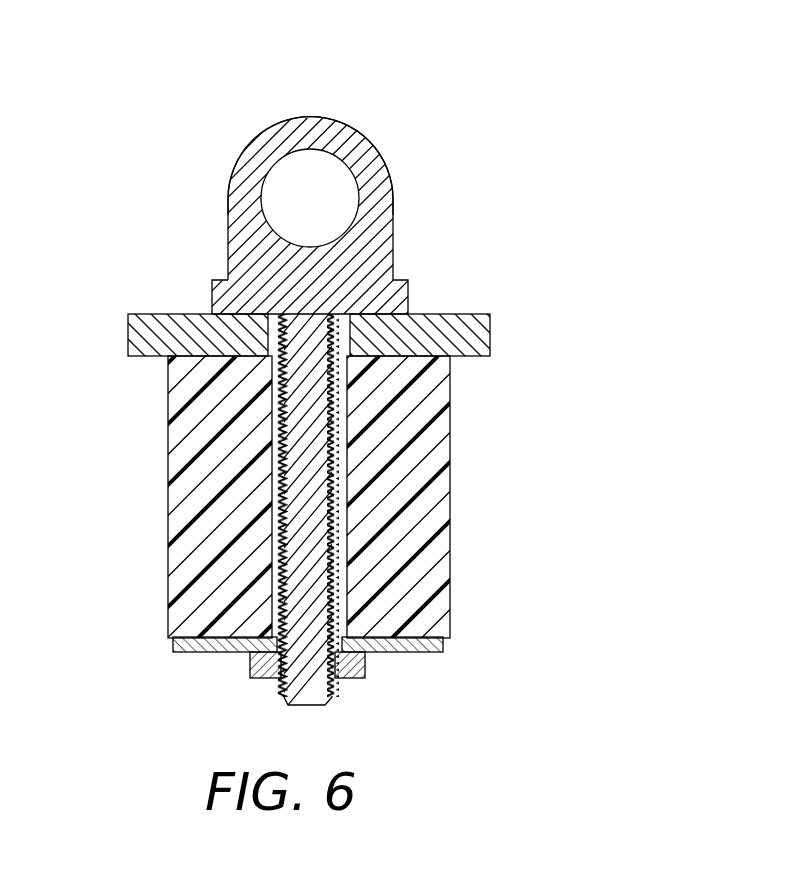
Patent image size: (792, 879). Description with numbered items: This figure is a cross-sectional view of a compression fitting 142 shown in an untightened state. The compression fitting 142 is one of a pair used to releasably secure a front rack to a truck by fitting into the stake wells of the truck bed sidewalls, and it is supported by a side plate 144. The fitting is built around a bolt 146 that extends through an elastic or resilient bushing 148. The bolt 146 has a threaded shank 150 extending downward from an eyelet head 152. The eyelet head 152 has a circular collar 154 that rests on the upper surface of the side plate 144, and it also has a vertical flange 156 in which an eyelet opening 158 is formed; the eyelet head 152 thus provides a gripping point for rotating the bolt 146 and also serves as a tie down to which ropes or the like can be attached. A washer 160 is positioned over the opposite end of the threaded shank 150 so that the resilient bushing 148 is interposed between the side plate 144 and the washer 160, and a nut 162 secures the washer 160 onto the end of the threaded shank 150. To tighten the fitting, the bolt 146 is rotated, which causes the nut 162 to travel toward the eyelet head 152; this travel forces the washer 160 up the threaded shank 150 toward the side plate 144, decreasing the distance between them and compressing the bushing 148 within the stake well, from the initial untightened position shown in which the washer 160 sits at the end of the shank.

The compression fitting 142 is at (533, 128).
The side plate 144 is at (490, 340).
The bolt 146 is at (343, 441).
The resilient bushing 148 is at (167, 520).
The threaded shank 150 is at (337, 540).
The eyelet head 152 is at (385, 205).
The circular collar 154 is at (408, 302).
The vertical flange 156 is at (225, 215).
The eyelet opening 158 is at (368, 170).
The washer 160 is at (443, 648).
The nut 162 is at (347, 683).